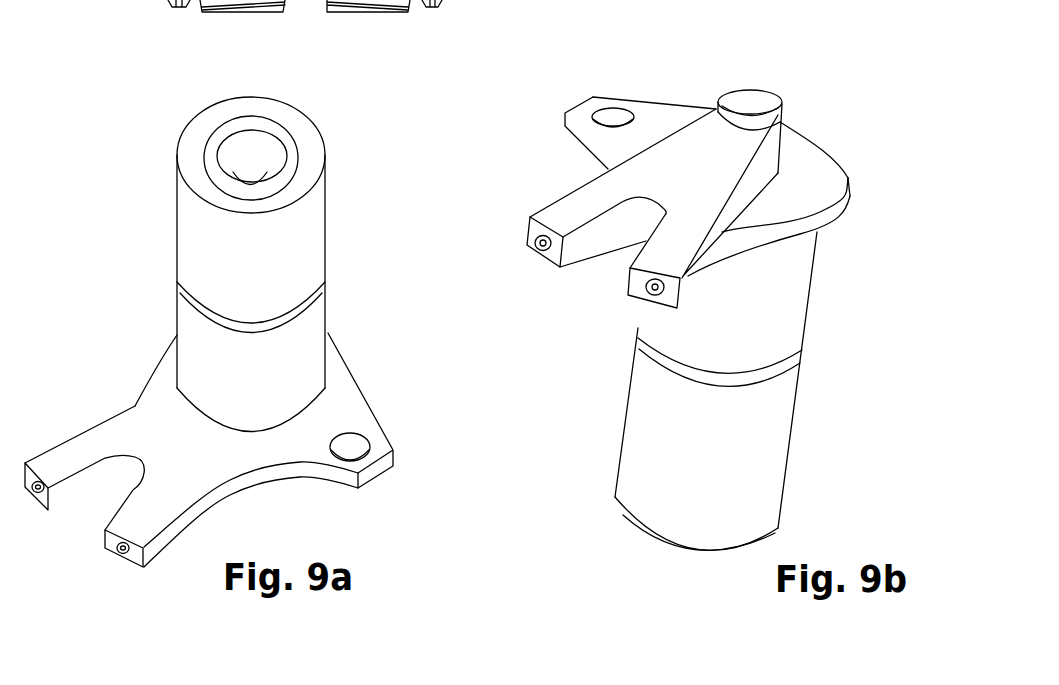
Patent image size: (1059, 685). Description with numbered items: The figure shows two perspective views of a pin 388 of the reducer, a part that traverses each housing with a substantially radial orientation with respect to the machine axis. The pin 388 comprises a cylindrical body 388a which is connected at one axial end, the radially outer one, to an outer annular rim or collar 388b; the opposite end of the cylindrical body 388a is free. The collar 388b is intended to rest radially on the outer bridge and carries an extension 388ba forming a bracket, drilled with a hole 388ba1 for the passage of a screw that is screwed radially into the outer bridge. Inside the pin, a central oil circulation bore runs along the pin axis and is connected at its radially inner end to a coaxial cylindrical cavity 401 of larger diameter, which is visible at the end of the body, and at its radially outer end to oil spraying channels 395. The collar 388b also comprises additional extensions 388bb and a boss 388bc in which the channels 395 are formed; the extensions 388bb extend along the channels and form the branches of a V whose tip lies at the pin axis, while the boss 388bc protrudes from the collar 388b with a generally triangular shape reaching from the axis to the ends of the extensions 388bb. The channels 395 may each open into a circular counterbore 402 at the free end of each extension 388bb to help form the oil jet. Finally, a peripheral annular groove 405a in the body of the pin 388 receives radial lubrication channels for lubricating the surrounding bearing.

In FIG. 9a, the pin 388 is at (259, 331).
In FIG. 9b, the pin 388 is at (669, 283).
In FIG. 9a, the cylindrical body 388a is at (264, 246).
In FIG. 9b, the cylindrical body 388a is at (737, 391).
In FIG. 9a, the collar 388b is at (259, 445).
In FIG. 9a, the extension 388ba is at (412, 419).
In FIG. 9b, the extension 388ba is at (700, 146).
In FIG. 9a, the hole 388ba1 is at (350, 452).
In FIG. 9b, the hole 388ba1 is at (615, 113).
In FIG. 9a, the additional extensions 388bb is at (68, 493).
In FIG. 9b, the additional extensions 388bb is at (582, 247).
In FIG. 9b, the boss 388bc is at (723, 137).
In FIG. 9a, the coaxial cylindrical cavity 401 is at (244, 156).
In FIG. 9a, the peripheral annular groove 405a is at (200, 310).
In FIG. 9b, the peripheral annular groove 405a is at (785, 372).
In FIG. 9b, the circular counterbore 402 is at (535, 235).
In FIG. 9b, the oil spraying channel 395 is at (538, 252).